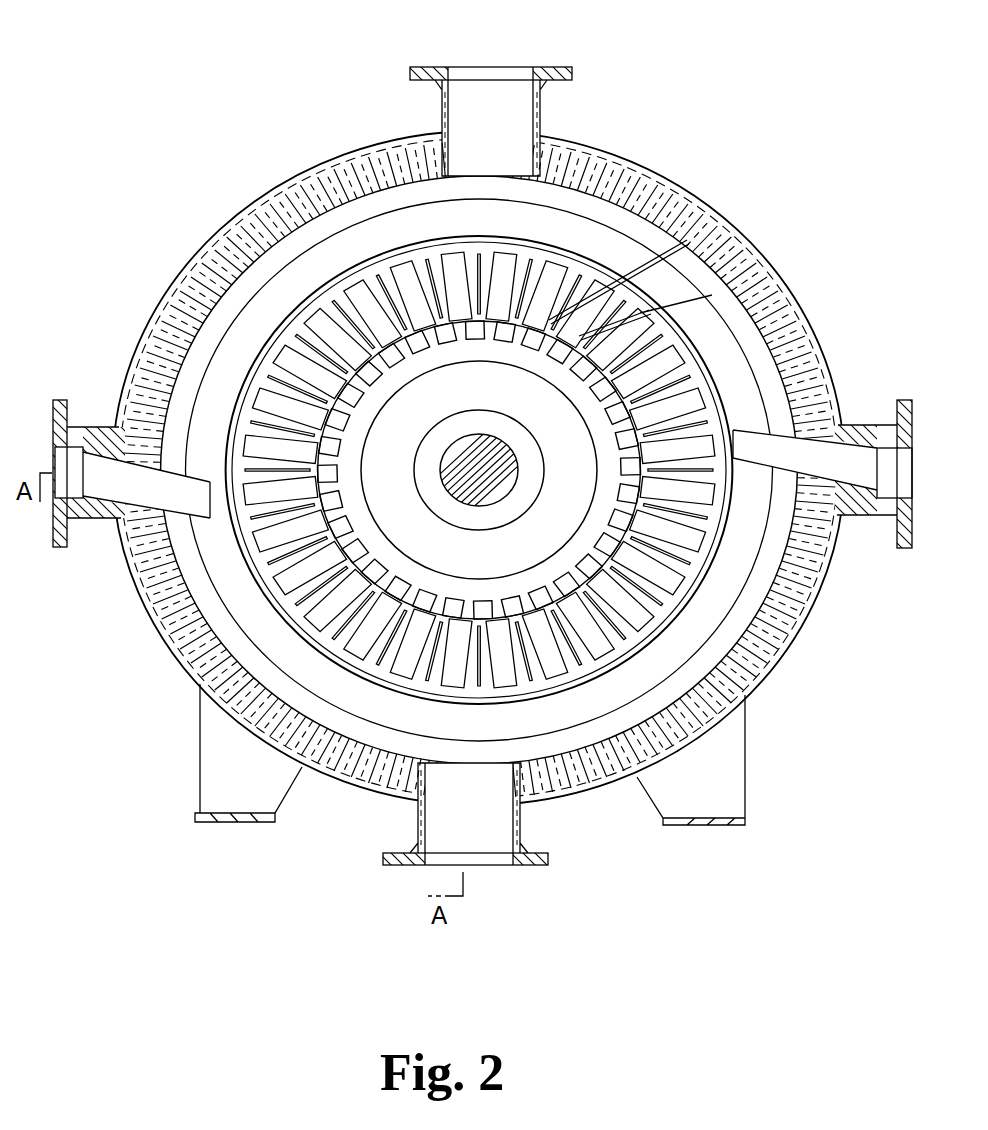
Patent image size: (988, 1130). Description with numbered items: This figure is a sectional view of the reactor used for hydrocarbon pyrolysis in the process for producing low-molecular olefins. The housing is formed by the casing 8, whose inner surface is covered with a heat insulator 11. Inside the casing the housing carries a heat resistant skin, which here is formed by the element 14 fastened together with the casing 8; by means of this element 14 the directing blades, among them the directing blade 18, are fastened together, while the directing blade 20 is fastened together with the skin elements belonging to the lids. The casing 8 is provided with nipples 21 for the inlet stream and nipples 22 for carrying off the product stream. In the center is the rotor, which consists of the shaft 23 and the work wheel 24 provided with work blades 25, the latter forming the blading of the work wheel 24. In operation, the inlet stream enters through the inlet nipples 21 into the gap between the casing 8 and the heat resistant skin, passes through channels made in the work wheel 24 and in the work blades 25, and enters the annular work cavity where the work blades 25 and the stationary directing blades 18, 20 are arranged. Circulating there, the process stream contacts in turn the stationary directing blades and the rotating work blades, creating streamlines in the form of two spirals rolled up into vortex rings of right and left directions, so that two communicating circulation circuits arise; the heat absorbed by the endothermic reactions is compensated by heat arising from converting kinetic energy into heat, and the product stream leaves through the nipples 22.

The casing 8 is at (479, 457).
The heat insulator 11 is at (494, 565).
The element of heat resistance skin 14 is at (479, 470).
The directing blade 18 is at (670, 252).
The directing blade 20 is at (551, 470).
The nipple for inlet stream 21 is at (468, 461).
The nipple for carrying off the product stream 22 is at (482, 441).
The shaft 23 is at (650, 527).
The work wheel 24 is at (381, 520).
The work blade 25 is at (546, 475).